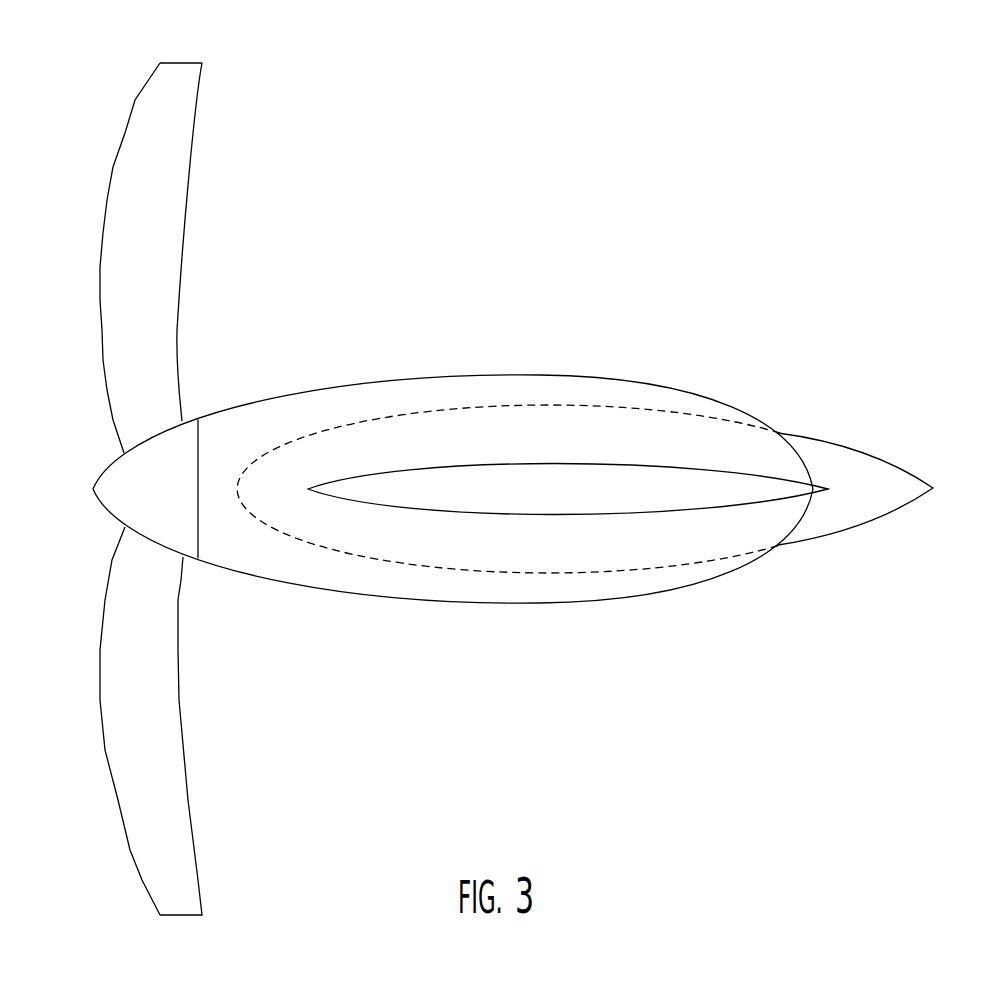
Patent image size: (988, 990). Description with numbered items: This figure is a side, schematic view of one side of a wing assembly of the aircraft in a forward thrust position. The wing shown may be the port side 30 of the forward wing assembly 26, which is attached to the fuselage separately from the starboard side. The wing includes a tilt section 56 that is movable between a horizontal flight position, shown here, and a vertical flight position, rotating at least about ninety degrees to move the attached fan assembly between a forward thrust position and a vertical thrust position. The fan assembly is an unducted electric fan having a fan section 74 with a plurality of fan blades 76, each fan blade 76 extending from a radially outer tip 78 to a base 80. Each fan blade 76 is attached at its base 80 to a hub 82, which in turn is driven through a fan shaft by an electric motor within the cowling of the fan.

The forward wing assembly 26 is at (845, 408).
The port side 30 is at (712, 352).
The tilt section 56 is at (443, 482).
The fan section 74 is at (261, 156).
The fan blade 76 is at (165, 285).
The radially outer tip 78 is at (185, 52).
The base 80 is at (98, 445).
The hub 82 is at (118, 492).